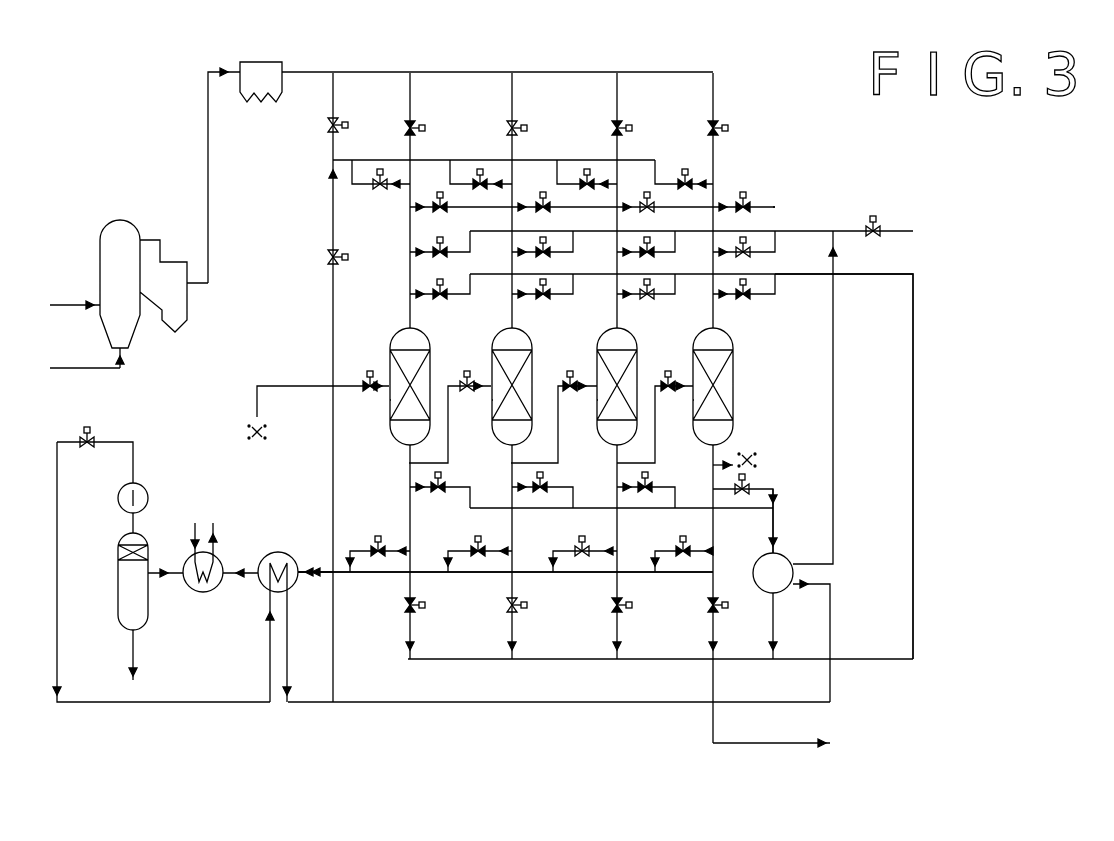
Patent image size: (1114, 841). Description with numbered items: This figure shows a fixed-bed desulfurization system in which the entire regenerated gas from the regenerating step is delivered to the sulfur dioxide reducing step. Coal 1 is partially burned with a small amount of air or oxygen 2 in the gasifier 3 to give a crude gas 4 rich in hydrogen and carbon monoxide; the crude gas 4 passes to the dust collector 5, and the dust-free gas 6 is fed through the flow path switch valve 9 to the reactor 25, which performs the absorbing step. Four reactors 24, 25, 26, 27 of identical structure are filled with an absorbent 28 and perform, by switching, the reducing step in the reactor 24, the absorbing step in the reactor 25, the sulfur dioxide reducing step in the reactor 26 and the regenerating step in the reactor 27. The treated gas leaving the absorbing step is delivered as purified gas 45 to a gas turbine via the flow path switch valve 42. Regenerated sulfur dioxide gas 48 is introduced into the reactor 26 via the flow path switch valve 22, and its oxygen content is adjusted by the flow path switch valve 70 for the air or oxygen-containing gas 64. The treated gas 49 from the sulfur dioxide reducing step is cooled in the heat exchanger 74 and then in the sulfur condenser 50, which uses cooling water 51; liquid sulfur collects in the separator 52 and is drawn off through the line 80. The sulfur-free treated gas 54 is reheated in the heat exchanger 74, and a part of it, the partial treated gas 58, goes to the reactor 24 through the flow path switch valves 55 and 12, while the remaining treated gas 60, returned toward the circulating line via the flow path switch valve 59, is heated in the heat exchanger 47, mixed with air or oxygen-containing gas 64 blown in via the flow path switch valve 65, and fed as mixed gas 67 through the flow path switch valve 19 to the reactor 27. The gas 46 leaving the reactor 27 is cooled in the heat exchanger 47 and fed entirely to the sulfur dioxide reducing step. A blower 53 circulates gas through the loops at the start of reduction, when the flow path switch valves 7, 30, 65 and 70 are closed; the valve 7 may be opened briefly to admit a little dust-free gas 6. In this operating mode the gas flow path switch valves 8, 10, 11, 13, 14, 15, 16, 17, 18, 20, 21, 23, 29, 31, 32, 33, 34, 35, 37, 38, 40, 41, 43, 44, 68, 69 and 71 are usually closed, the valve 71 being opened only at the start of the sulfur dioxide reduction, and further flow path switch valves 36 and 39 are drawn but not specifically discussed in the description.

The coal 1 is at (68, 304).
The air or oxygen 2 is at (74, 367).
The gasifier 3 is at (128, 228).
The crude gas 4 is at (208, 158).
The dust collector 5 is at (250, 66).
The dust-free gas 6 is at (318, 72).
The flow path switch valve 7 is at (348, 122).
The gas flow path switch valve 8 is at (425, 125).
The flow path switch valve 9 is at (528, 125).
The gas flow path switch valve 10 is at (632, 125).
The gas flow path switch valve 11 is at (728, 125).
The flow path switch valve 12 is at (380, 168).
The gas flow path switch valve 13 is at (480, 168).
The gas flow path switch valve 14 is at (587, 168).
The gas flow path switch valve 15 is at (685, 168).
The gas flow path switch valve 16 is at (444, 240).
The gas flow path switch valve 17 is at (547, 240).
The gas flow path switch valve 18 is at (651, 240).
The flow path switch valve 19 is at (747, 240).
The gas flow path switch valve 20 is at (440, 304).
The gas flow path switch valve 21 is at (542, 304).
The flow path switch valve 22 is at (646, 304).
The gas flow path switch valve 23 is at (744, 304).
The reactor 24 is at (395, 332).
The reactor 25 is at (496, 332).
The reactor 26 is at (601, 332).
The reactor 27 is at (698, 332).
The absorbent 28 is at (390, 397).
The gas flow path switch valve 29 is at (370, 370).
The flow path switch valve 30 is at (467, 370).
The gas flow path switch valve 31 is at (570, 370).
The gas flow path switch valve 32 is at (668, 370).
The gas flow path switch valve 33 is at (445, 474).
The gas flow path switch valve 34 is at (547, 474).
The gas flow path switch valve 35 is at (652, 474).
The valve 36 is at (748, 476).
The gas flow path switch valve 37 is at (377, 537).
The gas flow path switch valve 38 is at (477, 537).
The valve 39 is at (581, 537).
The gas flow path switch valve 40 is at (682, 537).
The gas flow path switch valve 41 is at (425, 605).
The flow path switch valve 42 is at (527, 605).
The gas flow path switch valve 43 is at (632, 605).
The gas flow path switch valve 44 is at (728, 605).
The purified gas 45 is at (765, 743).
The gas coming from the reactor 46 is at (775, 525).
The heat exchanger 47 is at (783, 592).
The regenerated sulfur dioxide gas 48 is at (880, 274).
The treated gas 49 is at (362, 574).
The sulfur condenser 50 is at (195, 591).
The cooling water 51 is at (192, 532).
The separator 52 is at (118, 593).
The blower 53 is at (118, 498).
The treated gas 54 is at (128, 442).
The flow path switch valve 55 is at (349, 257).
The partial treated gas 58 is at (333, 209).
The flow path switch valve 59 is at (86, 426).
The remaining treated gas 60 is at (367, 702).
The air or oxygen-containing gas 64 is at (455, 207).
The flow path switch valve 65 is at (874, 214).
The mixed gas 67 is at (825, 231).
The gas flow path switch valve 68 is at (440, 191).
The gas flow path switch valve 69 is at (543, 191).
The flow path switch valve 70 is at (647, 191).
The gas flow path switch valve 71 is at (743, 191).
The heat exchanger 74 is at (262, 590).
The line 80 is at (133, 655).